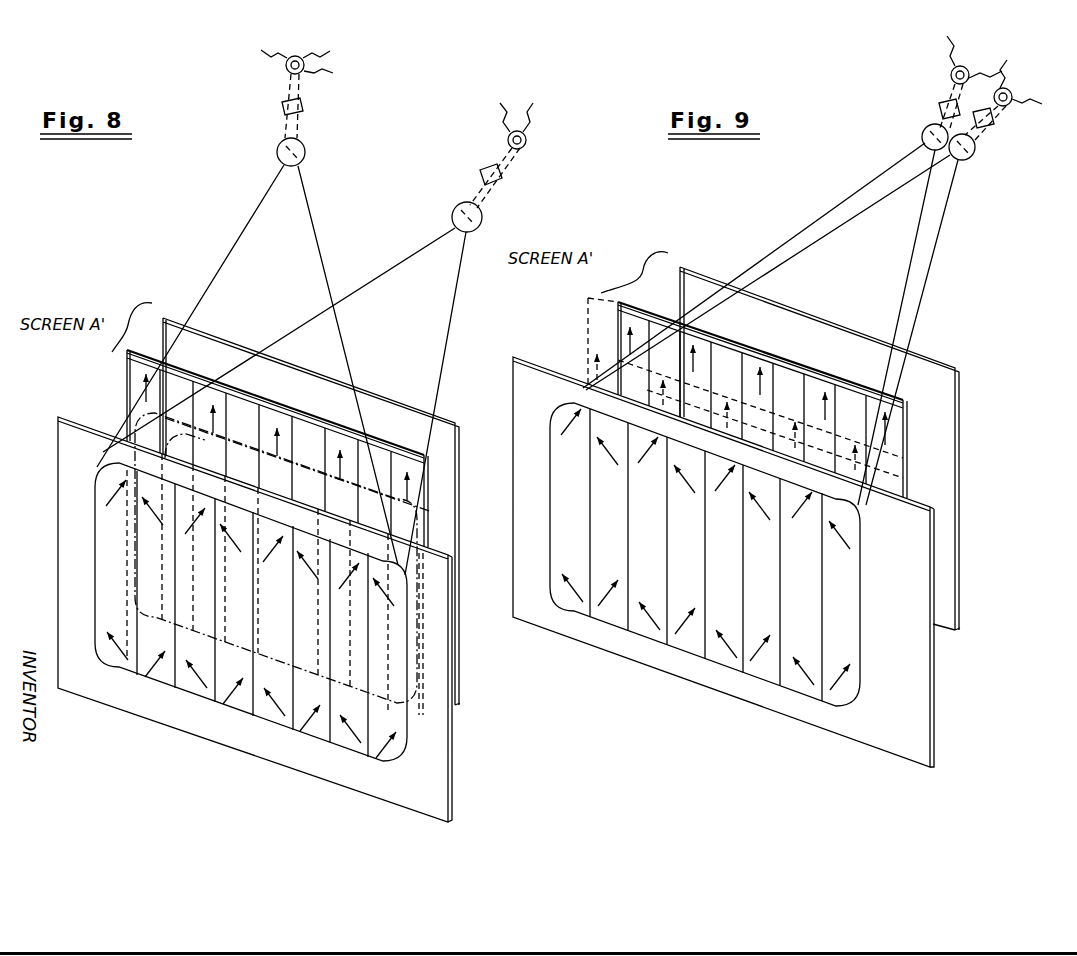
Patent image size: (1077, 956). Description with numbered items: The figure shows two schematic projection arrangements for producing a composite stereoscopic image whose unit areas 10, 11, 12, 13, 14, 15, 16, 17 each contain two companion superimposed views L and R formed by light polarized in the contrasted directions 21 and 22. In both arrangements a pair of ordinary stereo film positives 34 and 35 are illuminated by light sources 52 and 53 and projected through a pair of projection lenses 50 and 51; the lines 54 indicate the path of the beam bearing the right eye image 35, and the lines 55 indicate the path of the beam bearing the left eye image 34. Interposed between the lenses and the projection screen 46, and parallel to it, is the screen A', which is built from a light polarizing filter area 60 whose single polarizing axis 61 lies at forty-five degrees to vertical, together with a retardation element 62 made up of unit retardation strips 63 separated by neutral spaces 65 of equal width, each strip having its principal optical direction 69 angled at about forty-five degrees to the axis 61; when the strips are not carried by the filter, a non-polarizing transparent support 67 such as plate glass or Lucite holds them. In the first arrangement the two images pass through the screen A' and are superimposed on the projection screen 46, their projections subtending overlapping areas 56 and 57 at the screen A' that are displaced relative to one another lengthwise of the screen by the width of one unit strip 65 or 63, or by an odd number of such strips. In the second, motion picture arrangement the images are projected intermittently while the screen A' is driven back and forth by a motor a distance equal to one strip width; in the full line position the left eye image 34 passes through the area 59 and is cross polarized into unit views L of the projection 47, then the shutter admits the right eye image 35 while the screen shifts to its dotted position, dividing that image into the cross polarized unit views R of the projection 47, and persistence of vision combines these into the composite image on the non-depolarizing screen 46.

In FIG. 8, the unit area 10 is at (130, 672).
In FIG. 9, the unit area 10 is at (583, 608).
In FIG. 8, the unit area 11 is at (167, 682).
In FIG. 9, the unit area 11 is at (622, 622).
In FIG. 8, the unit area 12 is at (207, 702).
In FIG. 9, the unit area 12 is at (660, 636).
In FIG. 8, the unit area 13 is at (240, 714).
In FIG. 9, the unit area 13 is at (697, 650).
In FIG. 8, the unit area 14 is at (267, 728).
In FIG. 9, the unit area 14 is at (735, 662).
In FIG. 8, the unit area 15 is at (323, 738).
In FIG. 9, the unit area 15 is at (770, 674).
In FIG. 8, the unit area 16 is at (343, 745).
In FIG. 9, the unit area 16 is at (815, 685).
In FIG. 8, the unit area 17 is at (377, 758).
In FIG. 9, the unit area 17 is at (840, 696).
In FIG. 8, the polarization direction 21 is at (252, 622).
In FIG. 9, the polarization direction 21 is at (705, 553).
In FIG. 8, the polarization direction 22 is at (250, 623).
In FIG. 9, the polarization direction 22 is at (706, 560).
In FIG. 8, the stereo film positive 34 is at (303, 110).
In FIG. 9, the stereo film positive 34 is at (994, 122).
In FIG. 8, the stereo film positive 35 is at (502, 178).
In FIG. 9, the stereo film positive 35 is at (938, 104).
In FIG. 8, the projection screen 46 is at (450, 755).
In FIG. 9, the projection screen 46 is at (932, 676).
In FIG. 8, the projection 47 is at (95, 558).
In FIG. 9, the projection 47 is at (548, 490).
In FIG. 8, the projection lens 50 is at (453, 209).
In FIG. 9, the projection lens 50 is at (922, 132).
In FIG. 8, the projection lens 51 is at (305, 154).
In FIG. 9, the projection lens 51 is at (975, 152).
In FIG. 8, the light source 52 is at (533, 126).
In FIG. 9, the light source 52 is at (968, 68).
In FIG. 8, the light source 53 is at (311, 68).
In FIG. 9, the light source 53 is at (1011, 91).
In FIG. 8, the projection beam path lines 54 is at (410, 257).
In FIG. 9, the projection beam path lines 54 is at (783, 242).
In FIG. 8, the projection beam path lines 55 is at (226, 258).
In FIG. 9, the projection beam path lines 55 is at (838, 226).
In FIG. 8, the overlapping area 56 is at (276, 558).
In FIG. 8, the overlapping area 57 is at (185, 443).
In FIG. 9, the space plane area 59 is at (806, 471).
In FIG. 8, the light polarizing filter area 60 is at (460, 548).
In FIG. 9, the light polarizing filter area 60 is at (960, 396).
In FIG. 8, the polarizing axis 61 is at (283, 372).
In FIG. 9, the polarizing axis 61 is at (787, 322).
In FIG. 8, the retardation element 62 is at (422, 517).
In FIG. 9, the retardation element 62 is at (904, 470).
In FIG. 8, the retardation strip 63 is at (130, 350).
In FIG. 9, the retardation strip 63 is at (640, 300).
In FIG. 8, the neutral space 65 is at (176, 372).
In FIG. 9, the neutral space 65 is at (683, 318).
In FIG. 8, the transparent support 67 is at (427, 480).
In FIG. 9, the transparent support 67 is at (906, 440).
In FIG. 8, the principal optical direction arrow 69 is at (140, 388).
In FIG. 9, the principal optical direction arrow 69 is at (622, 334).